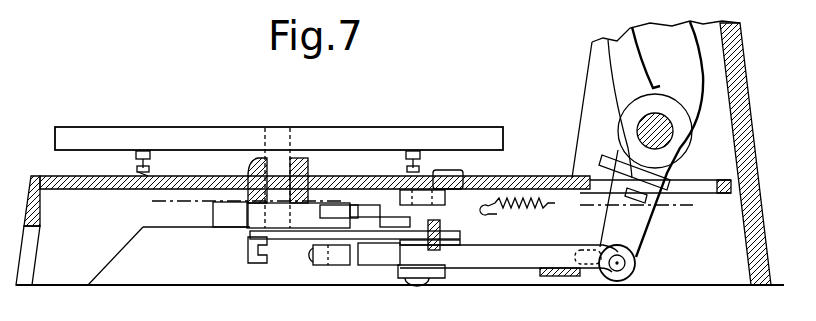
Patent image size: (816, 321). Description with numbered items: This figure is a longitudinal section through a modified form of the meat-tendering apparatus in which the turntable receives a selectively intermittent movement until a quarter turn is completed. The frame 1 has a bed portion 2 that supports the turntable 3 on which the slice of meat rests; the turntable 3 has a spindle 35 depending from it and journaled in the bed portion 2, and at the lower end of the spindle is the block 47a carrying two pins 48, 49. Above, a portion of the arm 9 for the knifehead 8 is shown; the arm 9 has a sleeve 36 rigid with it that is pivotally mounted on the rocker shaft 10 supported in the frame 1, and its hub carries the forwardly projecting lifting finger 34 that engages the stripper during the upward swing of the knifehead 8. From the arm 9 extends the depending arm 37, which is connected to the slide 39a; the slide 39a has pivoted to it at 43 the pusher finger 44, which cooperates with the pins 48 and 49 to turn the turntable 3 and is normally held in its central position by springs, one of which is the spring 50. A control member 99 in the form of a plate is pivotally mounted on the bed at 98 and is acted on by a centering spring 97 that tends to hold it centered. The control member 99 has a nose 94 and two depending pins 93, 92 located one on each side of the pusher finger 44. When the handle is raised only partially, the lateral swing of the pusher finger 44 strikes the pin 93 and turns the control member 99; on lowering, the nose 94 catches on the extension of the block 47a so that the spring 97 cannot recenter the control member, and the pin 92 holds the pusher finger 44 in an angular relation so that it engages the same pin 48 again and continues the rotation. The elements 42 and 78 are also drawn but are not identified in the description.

The frame 1 is at (742, 80).
The bed portion 2 is at (180, 188).
The turntable 3 is at (421, 127).
The knifehead 8 is at (422, 203).
The arm 9 is at (626, 68).
The rocker shaft 10 is at (655, 118).
The lifting finger 34 is at (606, 158).
The spindle 35 is at (273, 168).
The sleeve 36 is at (673, 143).
The depending arm 37 is at (648, 227).
The slide 39a is at (507, 268).
The pivot pin 42 is at (570, 276).
The pivot 43 is at (557, 276).
The pusher finger 44 is at (358, 243).
The block 47a is at (232, 220).
The pin 48 is at (318, 264).
The pin 49 is at (248, 258).
The spring 50 is at (383, 253).
The clamp 78 is at (462, 276).
The depending pin 92 is at (397, 230).
The depending pin 93 is at (434, 250).
The nose 94 is at (356, 204).
The centering spring 97 is at (531, 211).
The pivot 98 is at (459, 189).
The control member 99 is at (410, 243).